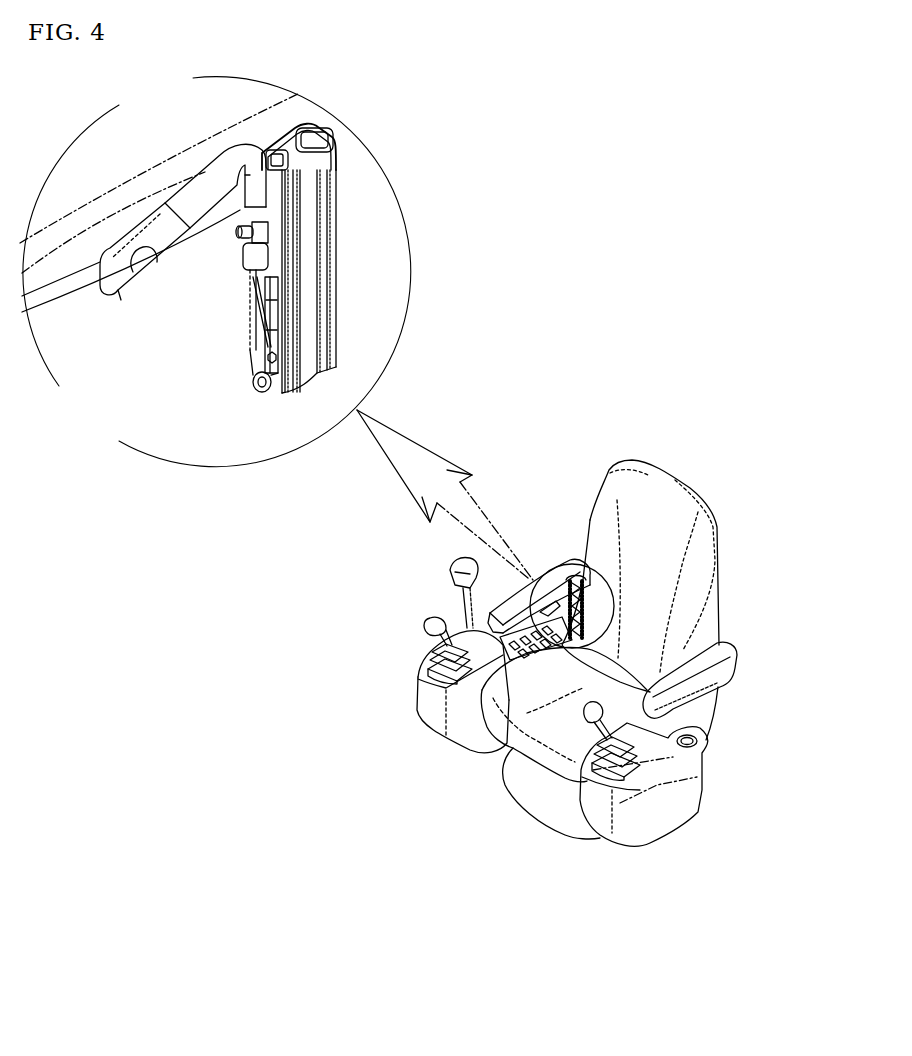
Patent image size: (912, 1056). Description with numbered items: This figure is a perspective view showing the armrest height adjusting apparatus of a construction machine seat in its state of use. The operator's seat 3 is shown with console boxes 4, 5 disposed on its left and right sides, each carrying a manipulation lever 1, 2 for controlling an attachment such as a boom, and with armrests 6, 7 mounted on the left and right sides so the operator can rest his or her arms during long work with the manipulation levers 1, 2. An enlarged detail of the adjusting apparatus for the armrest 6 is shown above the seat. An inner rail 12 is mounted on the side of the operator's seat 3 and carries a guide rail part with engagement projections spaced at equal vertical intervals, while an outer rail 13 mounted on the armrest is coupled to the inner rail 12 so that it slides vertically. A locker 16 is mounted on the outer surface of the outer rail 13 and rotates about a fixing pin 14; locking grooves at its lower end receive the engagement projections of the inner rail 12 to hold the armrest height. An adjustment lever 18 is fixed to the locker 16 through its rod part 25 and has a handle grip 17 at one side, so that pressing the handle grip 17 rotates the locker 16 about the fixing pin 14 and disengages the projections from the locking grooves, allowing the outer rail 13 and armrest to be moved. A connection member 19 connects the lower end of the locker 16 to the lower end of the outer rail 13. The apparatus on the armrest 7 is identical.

The manipulation lever 1 is at (426, 626).
The manipulation lever 2 is at (587, 716).
The operator's seat 3 is at (597, 540).
The console box 4 is at (422, 717).
The console box 5 is at (657, 832).
The armrest 6 is at (560, 557).
The armrest 7 is at (737, 655).
The inner rail 12 is at (313, 377).
The outer rail 13 is at (330, 337).
The fixing pin 14 is at (242, 228).
The locker 16 is at (280, 233).
The handle grip 17 is at (123, 292).
The adjustment lever 18 is at (172, 258).
The connection member 19 is at (262, 393).
The rod part 25 is at (245, 183).